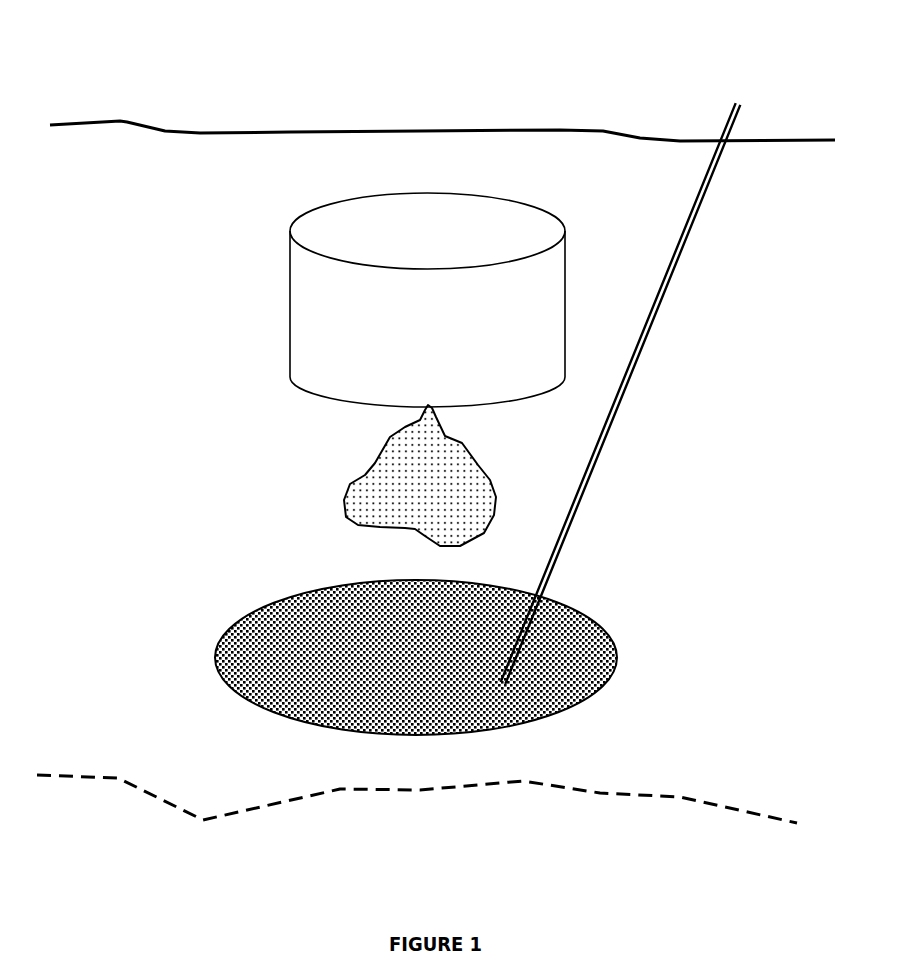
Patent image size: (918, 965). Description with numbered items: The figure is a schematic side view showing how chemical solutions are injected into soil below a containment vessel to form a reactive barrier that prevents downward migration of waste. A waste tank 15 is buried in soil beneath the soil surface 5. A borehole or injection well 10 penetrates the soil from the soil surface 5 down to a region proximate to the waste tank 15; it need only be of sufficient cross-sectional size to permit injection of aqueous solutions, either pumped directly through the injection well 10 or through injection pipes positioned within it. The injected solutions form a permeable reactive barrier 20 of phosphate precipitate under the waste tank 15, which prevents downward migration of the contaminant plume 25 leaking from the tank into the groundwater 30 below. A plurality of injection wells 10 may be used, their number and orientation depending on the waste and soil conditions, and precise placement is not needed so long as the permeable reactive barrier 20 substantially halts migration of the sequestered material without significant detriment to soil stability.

The soil surface 5 is at (290, 132).
The injection well 10 is at (603, 445).
The waste tank 15 is at (302, 312).
The permeable reactive barrier 20 is at (328, 625).
The contaminant plume 25 is at (375, 460).
The groundwater 30 is at (655, 815).